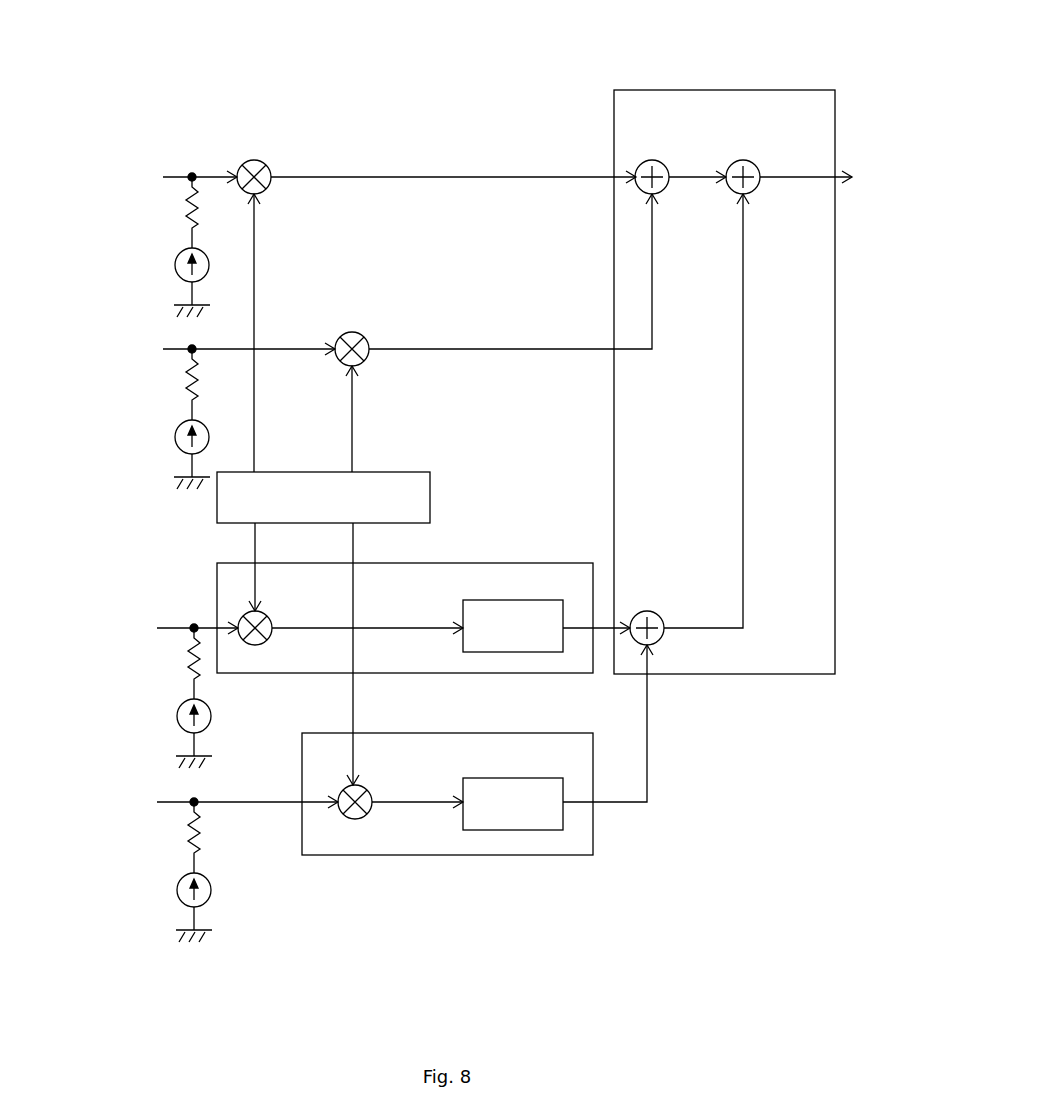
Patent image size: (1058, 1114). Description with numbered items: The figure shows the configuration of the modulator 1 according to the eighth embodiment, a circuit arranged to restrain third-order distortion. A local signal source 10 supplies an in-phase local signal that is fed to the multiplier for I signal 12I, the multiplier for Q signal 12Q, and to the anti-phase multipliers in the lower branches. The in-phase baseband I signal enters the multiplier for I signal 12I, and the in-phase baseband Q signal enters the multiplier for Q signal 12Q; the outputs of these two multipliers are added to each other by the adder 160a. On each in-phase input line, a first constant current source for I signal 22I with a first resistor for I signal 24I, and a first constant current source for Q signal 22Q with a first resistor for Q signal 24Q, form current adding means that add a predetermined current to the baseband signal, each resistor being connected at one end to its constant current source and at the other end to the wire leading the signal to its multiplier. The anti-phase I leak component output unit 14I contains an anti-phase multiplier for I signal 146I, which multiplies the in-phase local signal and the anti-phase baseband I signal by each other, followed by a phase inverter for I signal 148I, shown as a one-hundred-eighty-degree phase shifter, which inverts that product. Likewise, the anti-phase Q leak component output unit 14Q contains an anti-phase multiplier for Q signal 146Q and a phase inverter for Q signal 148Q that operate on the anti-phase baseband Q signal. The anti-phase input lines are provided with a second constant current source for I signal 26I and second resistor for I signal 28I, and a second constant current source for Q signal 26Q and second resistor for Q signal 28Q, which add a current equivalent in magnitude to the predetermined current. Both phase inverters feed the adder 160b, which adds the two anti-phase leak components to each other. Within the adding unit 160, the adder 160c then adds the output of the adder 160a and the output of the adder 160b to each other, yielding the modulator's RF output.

The modulator 1 is at (868, 57).
The local signal source 10 is at (430, 497).
The multiplier for I signal 12I is at (258, 158).
The multiplier for Q signal 12Q is at (362, 335).
The anti-phase I leak component output unit 14I is at (482, 563).
The anti-phase Q leak component output unit 14Q is at (407, 855).
The first constant current source for I signal 22I is at (176, 263).
The first constant current source for Q signal 22Q is at (177, 437).
The first resistor for I signal 24I is at (192, 222).
The first resistor for Q signal 24Q is at (192, 394).
The second constant current source for I signal 26I is at (178, 716).
The second constant current source for Q signal 26Q is at (178, 890).
The second resistor for I signal 28I is at (194, 674).
The second resistor for Q signal 28Q is at (194, 848).
The anti-phase multiplier for I signal 146I is at (266, 614).
The anti-phase multiplier for Q signal 146Q is at (366, 788).
The phase inverter for I signal 148I is at (466, 604).
The phase inverter for Q signal 148Q is at (508, 778).
The adding unit 160 is at (835, 360).
The adder 160a is at (661, 162).
The adder 160b is at (656, 614).
The adder 160c is at (752, 162).